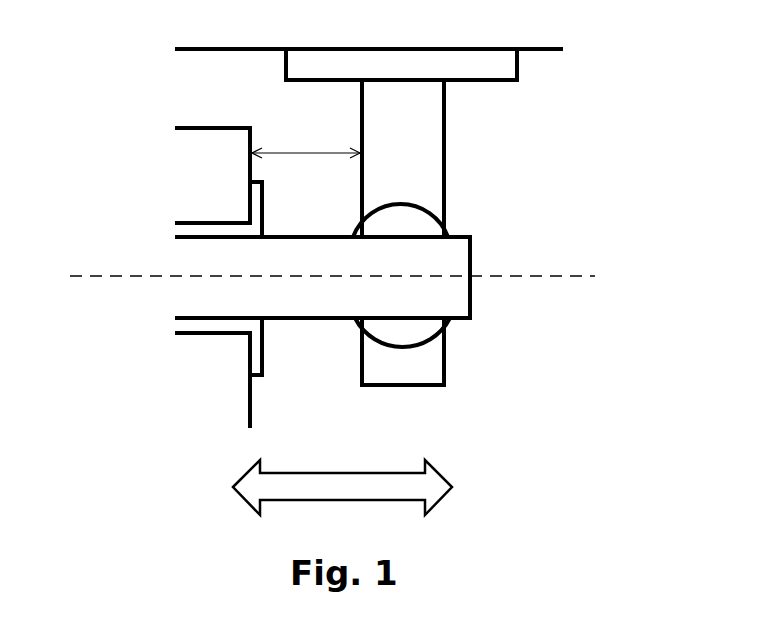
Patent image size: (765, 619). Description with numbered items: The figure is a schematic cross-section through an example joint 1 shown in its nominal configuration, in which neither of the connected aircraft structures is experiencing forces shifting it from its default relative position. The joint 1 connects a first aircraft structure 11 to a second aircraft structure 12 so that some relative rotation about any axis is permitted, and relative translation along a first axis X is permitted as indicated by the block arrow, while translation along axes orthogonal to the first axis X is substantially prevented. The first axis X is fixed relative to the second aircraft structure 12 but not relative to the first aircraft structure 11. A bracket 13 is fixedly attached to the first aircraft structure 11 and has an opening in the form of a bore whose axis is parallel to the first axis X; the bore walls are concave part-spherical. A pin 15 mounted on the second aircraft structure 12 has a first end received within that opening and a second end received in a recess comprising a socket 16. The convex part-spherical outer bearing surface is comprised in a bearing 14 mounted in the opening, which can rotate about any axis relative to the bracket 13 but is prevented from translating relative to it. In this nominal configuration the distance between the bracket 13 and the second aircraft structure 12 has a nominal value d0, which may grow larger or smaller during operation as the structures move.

The joint 1 is at (518, 406).
The first aircraft structure 11 is at (336, 26).
The second aircraft structure 12 is at (218, 388).
The bracket 13 is at (425, 169).
The bearing 14 is at (410, 225).
The pin 15 is at (443, 301).
The socket 16 is at (193, 227).
The first axis X is at (113, 280).
The nominal value of distance d0 is at (306, 144).